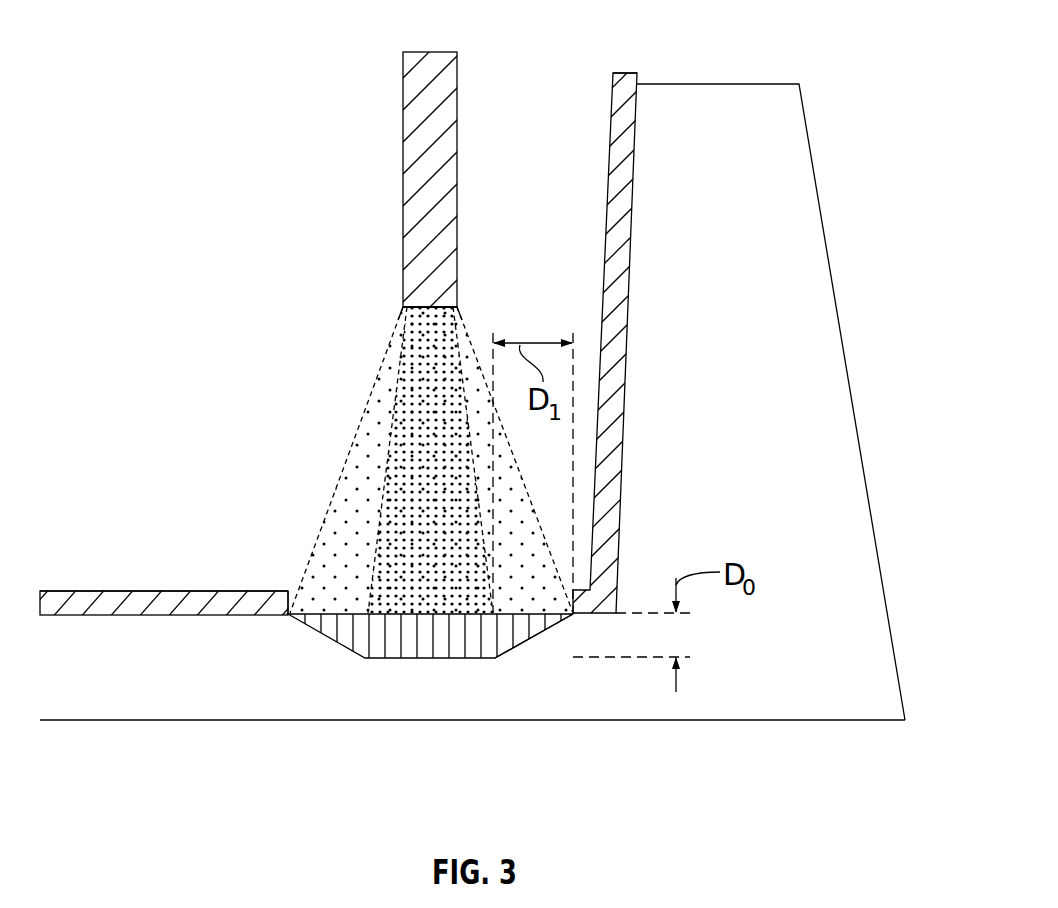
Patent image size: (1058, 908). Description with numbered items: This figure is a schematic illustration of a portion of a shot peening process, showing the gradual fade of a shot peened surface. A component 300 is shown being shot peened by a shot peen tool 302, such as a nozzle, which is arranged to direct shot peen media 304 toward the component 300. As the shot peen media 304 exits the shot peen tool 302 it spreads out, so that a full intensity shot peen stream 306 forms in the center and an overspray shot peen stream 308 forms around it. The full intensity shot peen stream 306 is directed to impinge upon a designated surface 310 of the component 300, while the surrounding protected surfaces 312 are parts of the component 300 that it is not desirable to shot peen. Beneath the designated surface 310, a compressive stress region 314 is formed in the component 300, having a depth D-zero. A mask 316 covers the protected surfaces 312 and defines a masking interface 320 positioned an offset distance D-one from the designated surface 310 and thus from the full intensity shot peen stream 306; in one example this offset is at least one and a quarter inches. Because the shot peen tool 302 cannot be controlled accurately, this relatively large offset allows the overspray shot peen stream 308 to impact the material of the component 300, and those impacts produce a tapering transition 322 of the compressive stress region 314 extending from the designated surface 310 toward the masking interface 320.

The component 300 is at (758, 117).
The shot peen tool 302 is at (415, 97).
The shot peen media 304 is at (463, 305).
The full intensity shot peen stream 306 is at (412, 320).
The overspray shot peen stream 308 is at (362, 420).
The designated surface 310 is at (421, 611).
The protected surfaces 312 is at (623, 380).
The compressive stress region 314 is at (458, 650).
The mask 316 is at (90, 602).
The masking interface 320 is at (294, 604).
The tapering transition 322 is at (514, 660).